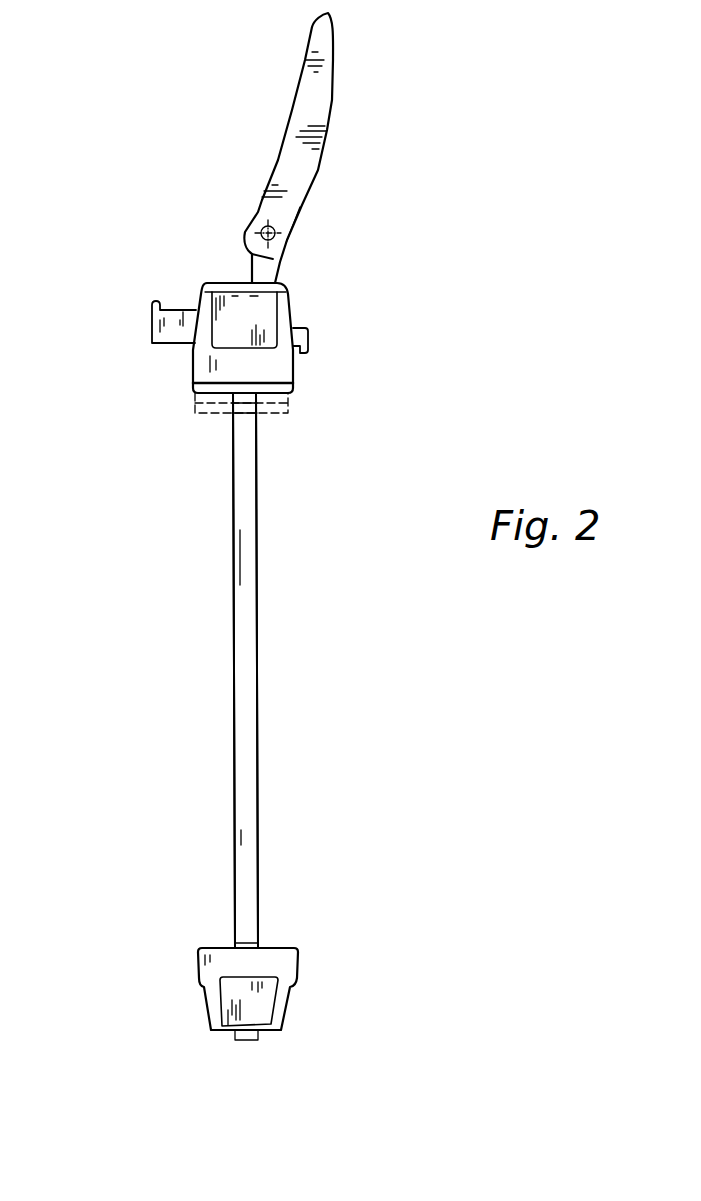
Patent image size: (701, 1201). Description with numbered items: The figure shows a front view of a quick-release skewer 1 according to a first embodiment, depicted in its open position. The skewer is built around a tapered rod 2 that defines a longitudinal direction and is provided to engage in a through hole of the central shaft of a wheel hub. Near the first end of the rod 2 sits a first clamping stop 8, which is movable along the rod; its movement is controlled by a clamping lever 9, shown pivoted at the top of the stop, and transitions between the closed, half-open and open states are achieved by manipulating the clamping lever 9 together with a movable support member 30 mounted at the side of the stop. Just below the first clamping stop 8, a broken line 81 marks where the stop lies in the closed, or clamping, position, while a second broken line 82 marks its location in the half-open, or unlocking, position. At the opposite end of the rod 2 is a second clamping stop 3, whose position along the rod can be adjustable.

The hand tool 1 is at (133, 450).
The tapered rod 2 is at (240, 692).
The second clamping stop 3 is at (305, 953).
The first clamping stop 8 is at (299, 368).
The clamping lever 9 is at (334, 129).
The movable support member 30 is at (170, 312).
The broken line (closed position of first clamping stop) 81 is at (282, 418).
The broken line (half-open position of first clamping stop) 82 is at (295, 400).